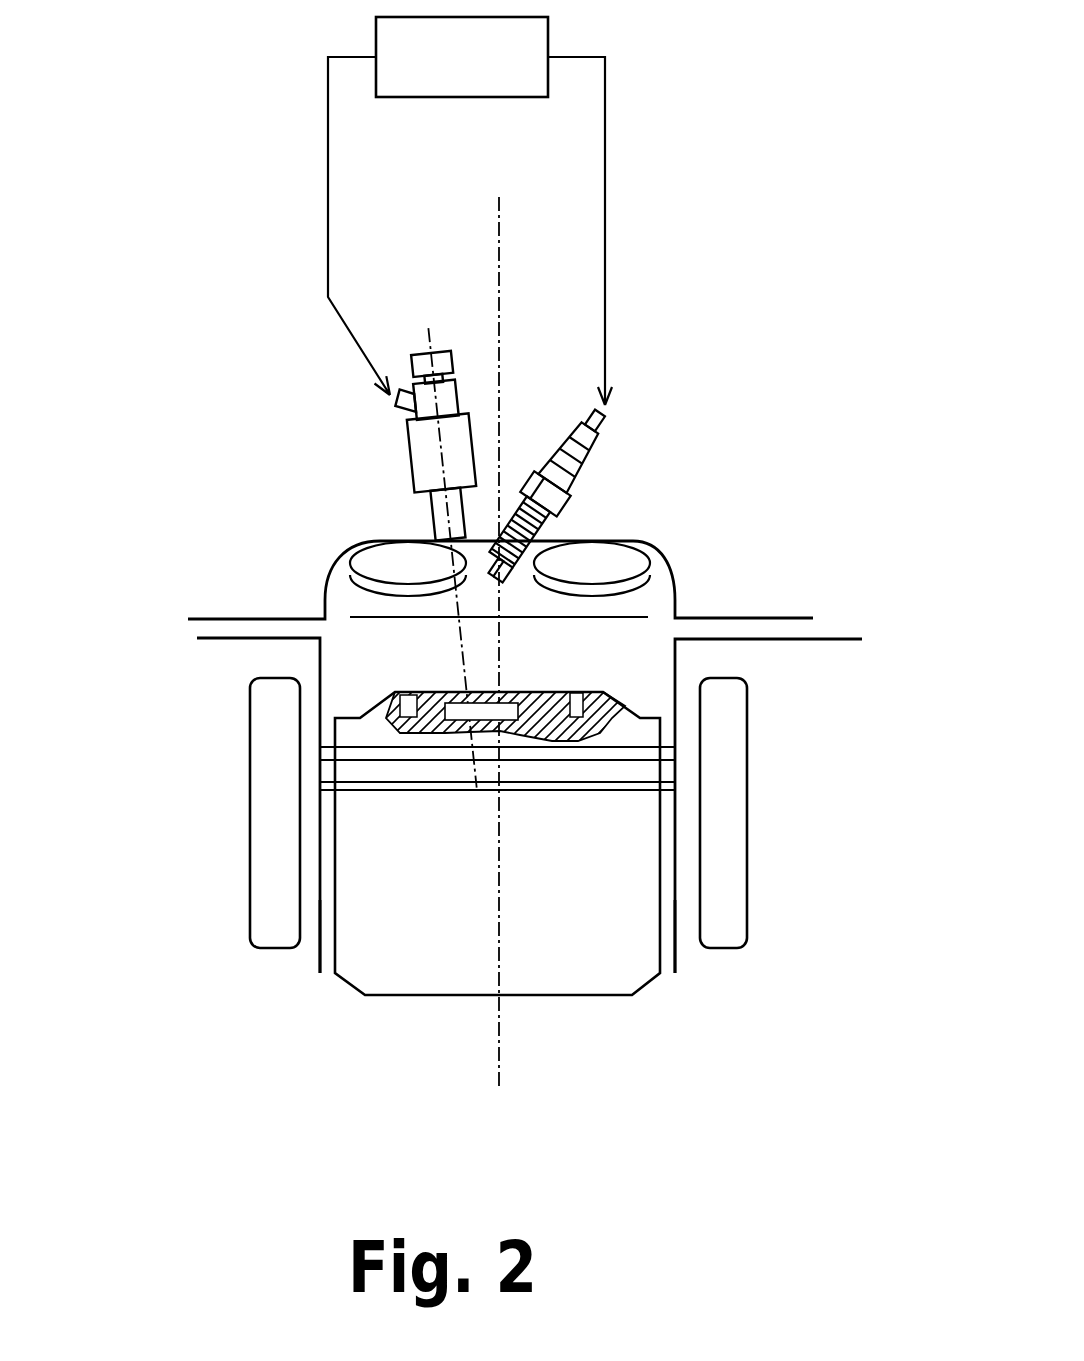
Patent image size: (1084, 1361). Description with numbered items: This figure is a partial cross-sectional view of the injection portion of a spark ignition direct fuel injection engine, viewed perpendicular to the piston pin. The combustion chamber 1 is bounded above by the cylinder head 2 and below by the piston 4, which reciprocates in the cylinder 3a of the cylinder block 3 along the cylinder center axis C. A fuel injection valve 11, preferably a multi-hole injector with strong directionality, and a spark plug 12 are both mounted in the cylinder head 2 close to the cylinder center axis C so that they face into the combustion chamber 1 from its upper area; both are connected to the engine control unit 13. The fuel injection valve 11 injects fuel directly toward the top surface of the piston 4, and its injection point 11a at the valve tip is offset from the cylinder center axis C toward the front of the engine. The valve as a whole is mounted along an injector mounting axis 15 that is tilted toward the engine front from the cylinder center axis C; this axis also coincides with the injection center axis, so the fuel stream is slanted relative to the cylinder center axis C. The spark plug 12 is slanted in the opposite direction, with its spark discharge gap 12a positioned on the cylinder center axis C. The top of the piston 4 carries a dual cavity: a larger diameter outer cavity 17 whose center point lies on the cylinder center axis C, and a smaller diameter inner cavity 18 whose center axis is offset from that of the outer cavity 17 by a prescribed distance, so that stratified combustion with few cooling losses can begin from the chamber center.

The combustion chamber 1 is at (594, 669).
The cylinder head 2 is at (762, 590).
The cylinder block 3 is at (812, 703).
The cylinder 3a is at (677, 945).
The piston 4 is at (545, 997).
The fuel injection valve 11 is at (416, 462).
The injection point 11a is at (443, 543).
The spark plug 12 is at (580, 487).
The spark discharge gap 12a is at (528, 592).
The engine control unit 13 is at (548, 40).
The injector mounting axis 15 is at (430, 352).
The outer cavity 17 is at (438, 710).
The inner cavity 18 is at (502, 722).
The cylinder center axis C is at (500, 250).